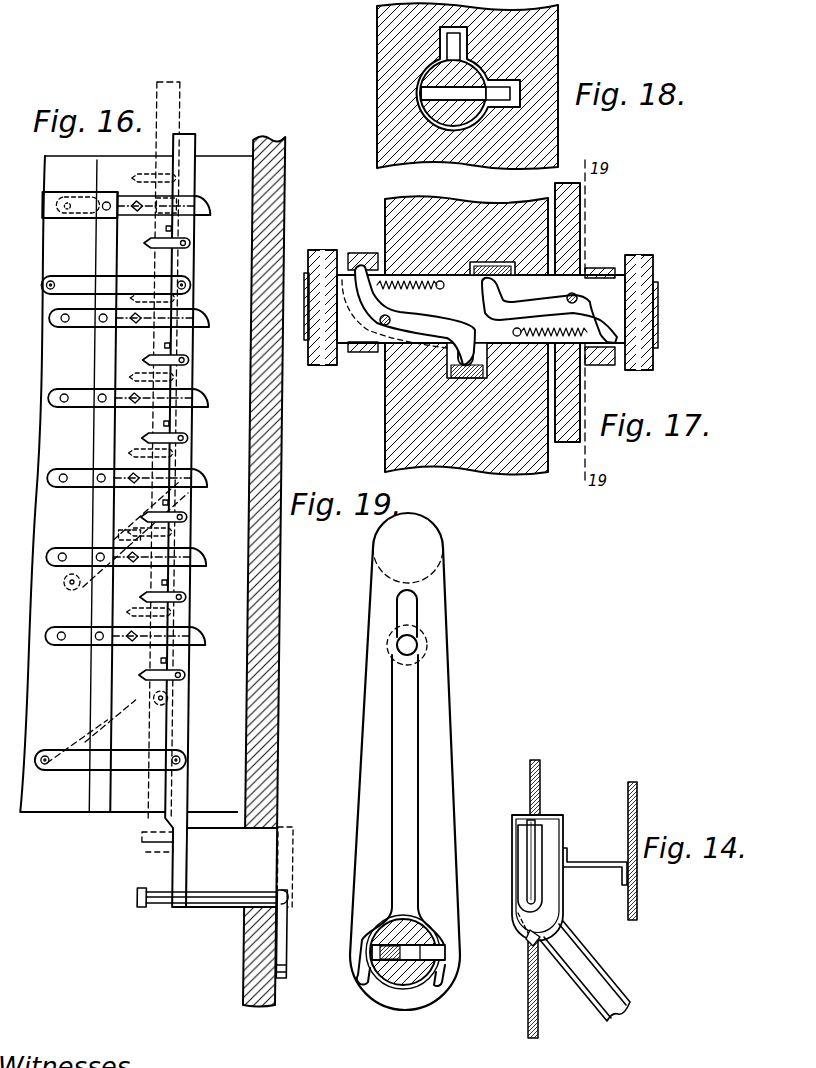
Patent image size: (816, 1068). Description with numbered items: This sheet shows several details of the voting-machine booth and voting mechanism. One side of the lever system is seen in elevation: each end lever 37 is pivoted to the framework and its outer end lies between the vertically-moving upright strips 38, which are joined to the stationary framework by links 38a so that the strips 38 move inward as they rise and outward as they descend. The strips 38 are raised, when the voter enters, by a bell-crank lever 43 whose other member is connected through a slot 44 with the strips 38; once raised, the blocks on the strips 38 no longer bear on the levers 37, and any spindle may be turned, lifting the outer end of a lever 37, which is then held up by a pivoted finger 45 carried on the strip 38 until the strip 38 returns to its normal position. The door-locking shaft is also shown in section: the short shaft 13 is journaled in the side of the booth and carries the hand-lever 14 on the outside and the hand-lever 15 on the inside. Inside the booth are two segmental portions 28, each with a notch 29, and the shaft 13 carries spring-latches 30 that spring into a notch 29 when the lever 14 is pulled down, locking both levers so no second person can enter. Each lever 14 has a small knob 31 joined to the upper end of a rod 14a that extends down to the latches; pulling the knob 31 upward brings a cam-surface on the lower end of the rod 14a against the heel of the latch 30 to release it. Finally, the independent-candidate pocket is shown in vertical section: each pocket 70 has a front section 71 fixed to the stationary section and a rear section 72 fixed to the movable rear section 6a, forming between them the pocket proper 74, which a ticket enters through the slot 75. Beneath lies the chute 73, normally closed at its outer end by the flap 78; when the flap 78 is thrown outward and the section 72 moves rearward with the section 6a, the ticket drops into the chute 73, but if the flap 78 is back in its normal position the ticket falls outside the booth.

In FIG. 14, the movable rear section 6a is at (638, 813).
In FIG. 18, the short shaft 13 is at (435, 108).
In FIG. 17, the short shaft 13 is at (658, 314).
In FIG. 19, the short shaft 13 is at (402, 984).
In FIG. 17, the hand-lever 14 is at (653, 266).
In FIG. 19, the hand-lever 14 is at (440, 658).
In FIG. 19, the rod 14a is at (407, 738).
In FIG. 17, the hand-lever 15 is at (314, 365).
In FIG. 18, the segmental portion 28 is at (420, 70).
In FIG. 17, the segmental portion 28 is at (492, 266).
In FIG. 18, the notch 29 is at (453, 42).
In FIG. 17, the notch 29 is at (460, 357).
In FIG. 17, the spring-latch 30 is at (553, 297).
In FIG. 19, the spring-latch 30 is at (423, 953).
In FIG. 19, the small knob 31 is at (409, 627).
In FIG. 16, the lever 37 is at (210, 208).
In FIG. 16, the upright strip 38 is at (191, 533).
In FIG. 16, the link 38a is at (66, 290).
In FIG. 16, the bell-crank lever 43 is at (292, 938).
In FIG. 16, the slot 44 is at (265, 863).
In FIG. 16, the pivoted finger 45 is at (147, 243).
In FIG. 14, the pocket 70 is at (525, 878).
In FIG. 14, the front section 71 is at (519, 832).
In FIG. 14, the rear section 72 is at (564, 833).
In FIG. 14, the chute 73 is at (608, 980).
In FIG. 14, the pocket proper 74 is at (533, 860).
In FIG. 14, the slot 75 is at (528, 827).
In FIG. 14, the flap 78 is at (530, 937).